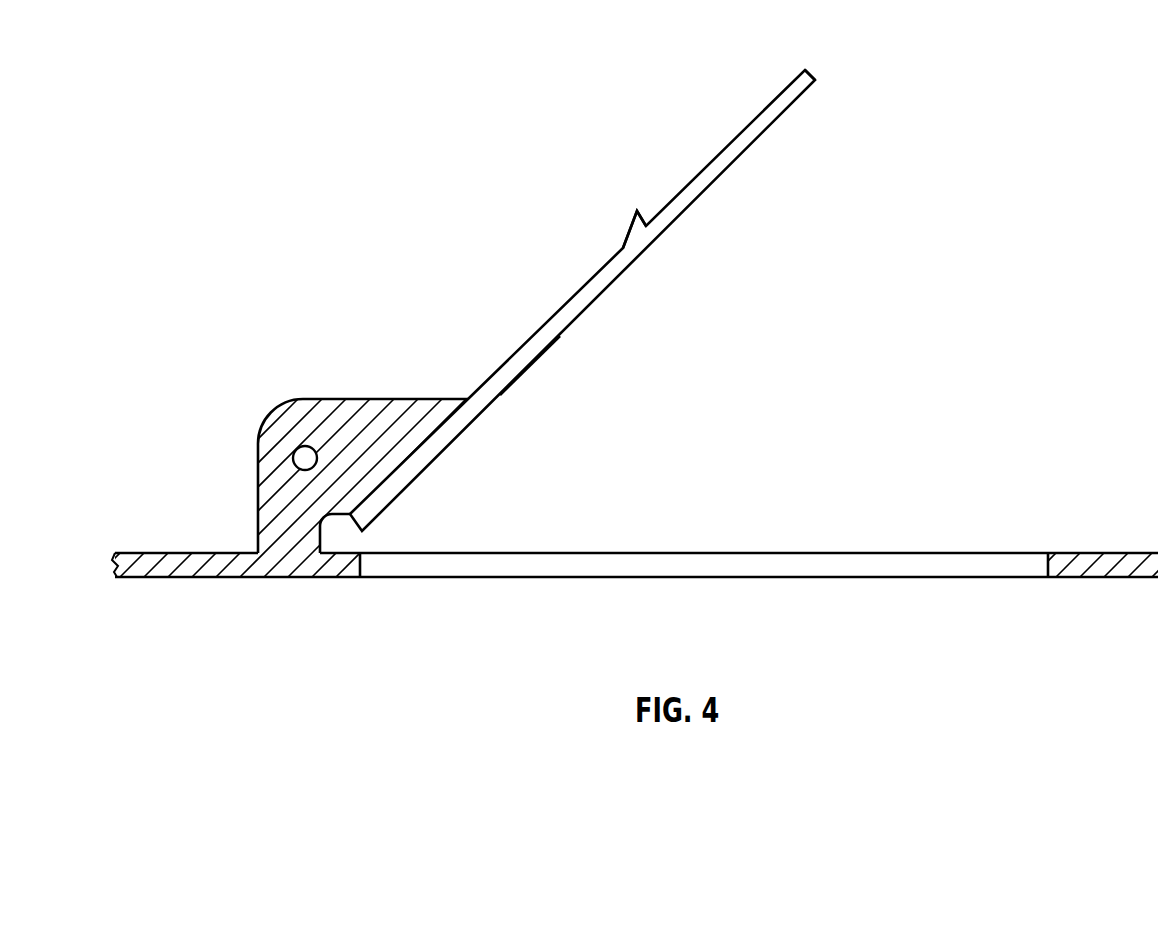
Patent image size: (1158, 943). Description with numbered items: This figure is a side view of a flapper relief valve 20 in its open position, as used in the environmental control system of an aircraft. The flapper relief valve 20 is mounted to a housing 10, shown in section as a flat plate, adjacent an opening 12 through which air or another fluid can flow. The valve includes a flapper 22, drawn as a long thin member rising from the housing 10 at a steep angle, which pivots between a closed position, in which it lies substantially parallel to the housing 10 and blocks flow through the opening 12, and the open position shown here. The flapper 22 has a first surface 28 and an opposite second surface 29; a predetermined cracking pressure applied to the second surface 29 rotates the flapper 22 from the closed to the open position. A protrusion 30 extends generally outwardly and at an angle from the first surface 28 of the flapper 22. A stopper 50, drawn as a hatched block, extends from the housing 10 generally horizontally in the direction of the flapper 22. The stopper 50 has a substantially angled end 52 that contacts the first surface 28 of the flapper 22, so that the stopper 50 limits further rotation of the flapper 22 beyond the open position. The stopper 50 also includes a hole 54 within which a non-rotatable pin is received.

The housing 10 is at (195, 570).
The opening 12 is at (1028, 567).
The flapper relief valve 20 is at (186, 70).
The flapper 22 is at (578, 292).
The first surface 28 is at (786, 90).
The second surface 29 is at (566, 328).
The protrusion 30 is at (627, 233).
The stopper 50 is at (291, 408).
The end of stopper 52 is at (428, 448).
The hole 54 is at (300, 457).